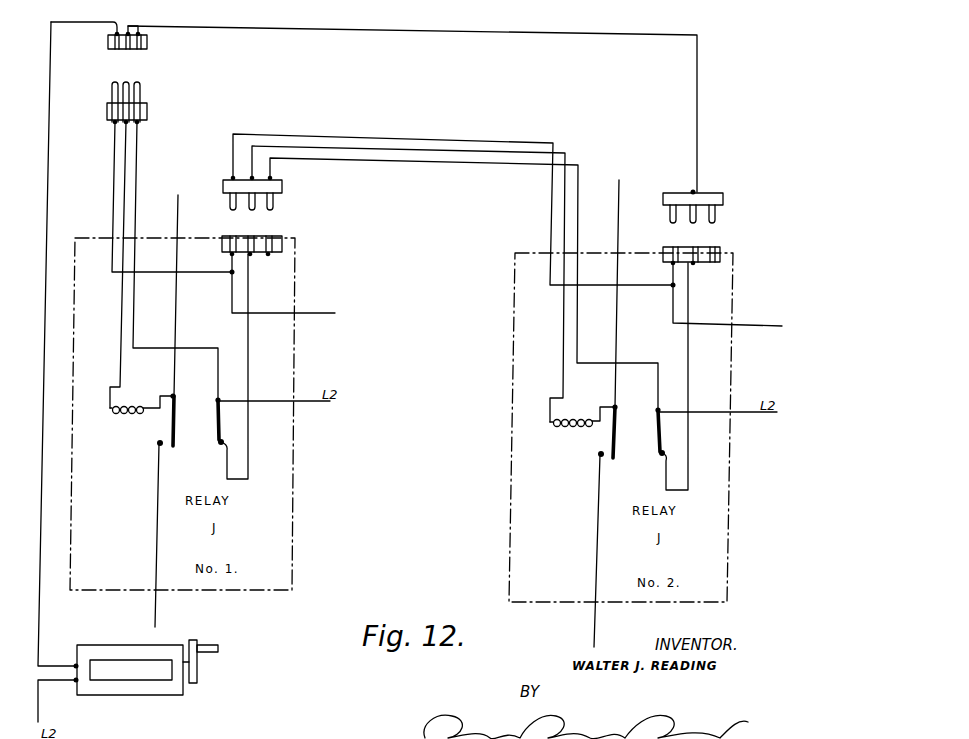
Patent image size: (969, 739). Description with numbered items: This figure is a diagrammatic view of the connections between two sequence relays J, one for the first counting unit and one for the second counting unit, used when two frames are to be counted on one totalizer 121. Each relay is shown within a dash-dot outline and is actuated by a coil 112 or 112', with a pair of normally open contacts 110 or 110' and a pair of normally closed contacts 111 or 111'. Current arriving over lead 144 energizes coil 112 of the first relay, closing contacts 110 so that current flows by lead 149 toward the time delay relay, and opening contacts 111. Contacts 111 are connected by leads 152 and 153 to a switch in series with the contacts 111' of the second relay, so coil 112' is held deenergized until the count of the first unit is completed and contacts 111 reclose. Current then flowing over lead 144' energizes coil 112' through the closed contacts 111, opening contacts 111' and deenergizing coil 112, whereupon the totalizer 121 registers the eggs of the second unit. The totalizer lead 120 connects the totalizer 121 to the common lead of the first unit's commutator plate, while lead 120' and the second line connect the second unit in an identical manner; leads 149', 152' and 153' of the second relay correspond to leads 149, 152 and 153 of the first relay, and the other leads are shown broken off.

The normally open contacts 110 is at (142, 457).
The normally closed contacts 111 is at (208, 456).
The coil 112 is at (141, 417).
The totalizer lead 120 is at (294, 283).
The totalizer 121 is at (140, 690).
The lead 144 is at (192, 320).
The lead 149 is at (140, 535).
The lead 152 is at (203, 407).
The lead 153 is at (250, 366).
The normally open contacts 110' is at (585, 468).
The normally closed contacts 111' is at (650, 466).
The coil 112' is at (582, 430).
The lead 120' is at (727, 294).
The lead 144' is at (634, 319).
The lead 149' is at (579, 551).
The lead 152' is at (642, 415).
The lead 153' is at (692, 376).